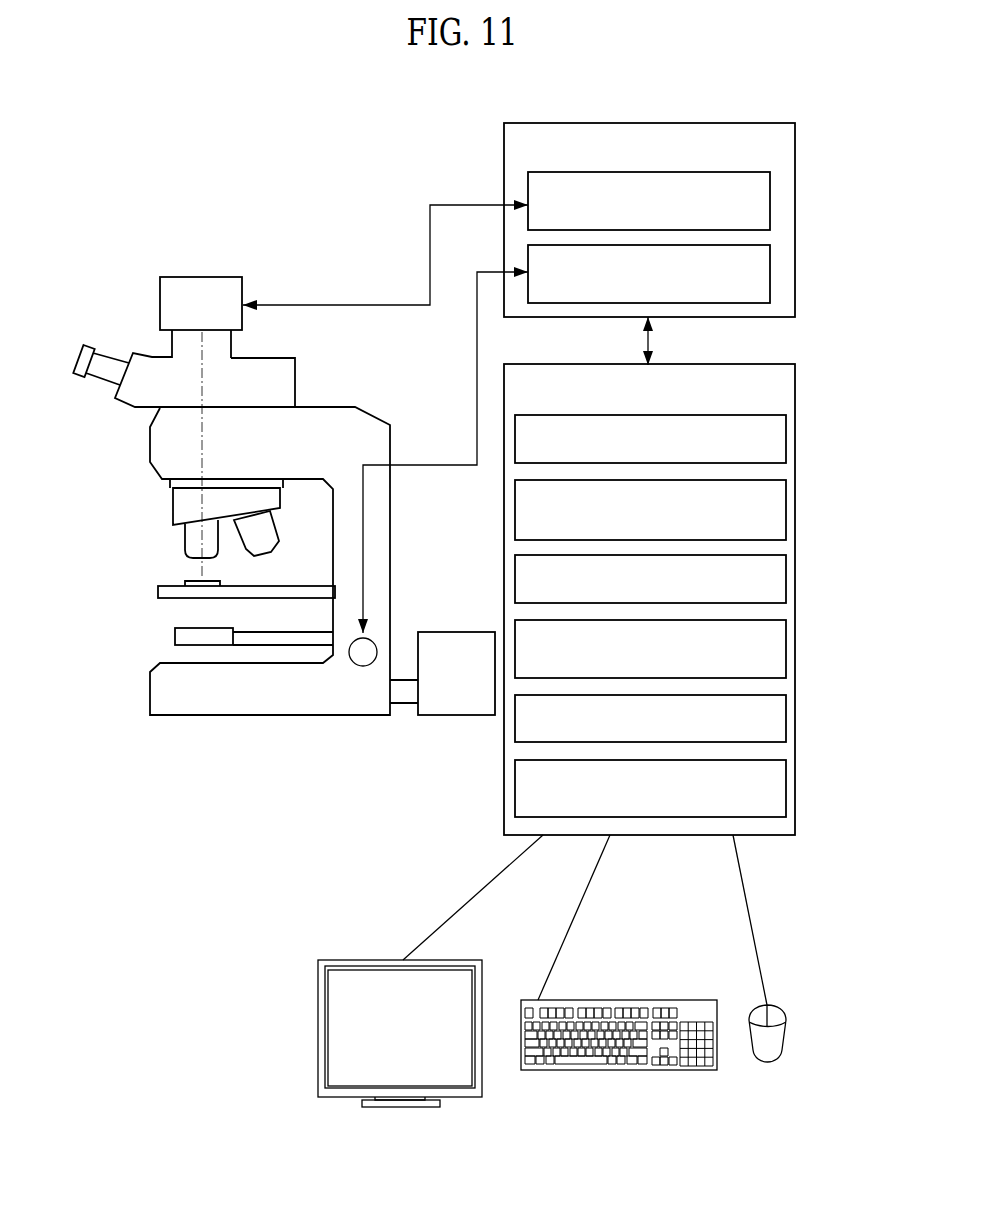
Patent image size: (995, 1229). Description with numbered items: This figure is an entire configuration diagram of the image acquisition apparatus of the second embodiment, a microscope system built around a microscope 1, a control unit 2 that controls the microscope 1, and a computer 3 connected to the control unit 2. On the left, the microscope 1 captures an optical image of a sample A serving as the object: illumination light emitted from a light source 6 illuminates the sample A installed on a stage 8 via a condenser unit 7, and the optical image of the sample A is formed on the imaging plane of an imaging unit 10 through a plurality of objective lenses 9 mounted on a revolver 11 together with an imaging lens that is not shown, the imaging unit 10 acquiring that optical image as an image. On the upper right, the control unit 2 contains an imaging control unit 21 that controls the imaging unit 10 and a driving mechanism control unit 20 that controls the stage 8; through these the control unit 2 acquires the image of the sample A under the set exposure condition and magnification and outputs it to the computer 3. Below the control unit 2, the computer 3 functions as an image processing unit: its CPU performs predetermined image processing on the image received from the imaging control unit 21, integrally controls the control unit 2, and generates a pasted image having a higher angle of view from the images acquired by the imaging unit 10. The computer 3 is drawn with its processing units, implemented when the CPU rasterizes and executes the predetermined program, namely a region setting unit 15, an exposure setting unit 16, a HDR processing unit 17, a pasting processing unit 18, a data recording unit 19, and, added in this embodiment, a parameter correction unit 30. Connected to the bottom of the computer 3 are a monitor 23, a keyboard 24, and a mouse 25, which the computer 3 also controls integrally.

The microscope 1 is at (283, 170).
The control unit 2 is at (795, 150).
The computer 3 is at (795, 385).
The light source 6 is at (455, 632).
The condenser unit 7 is at (175, 635).
The stage 8 is at (158, 590).
The objective lenses 9 is at (185, 540).
The imaging unit 10 is at (218, 277).
The revolver 11 is at (183, 505).
The region setting unit 15 is at (786, 438).
The exposure setting unit 16 is at (786, 512).
The HDR processing unit 17 is at (786, 577).
The pasting processing unit 18 is at (786, 645).
The data recording unit 19 is at (786, 717).
The driving mechanism control unit 20 is at (770, 272).
The imaging control unit 21 is at (770, 203).
The monitor 23 is at (318, 1022).
The keyboard 24 is at (670, 1000).
The mouse 25 is at (786, 1027).
The parameter correction unit 30 is at (786, 787).
The sample A is at (185, 580).